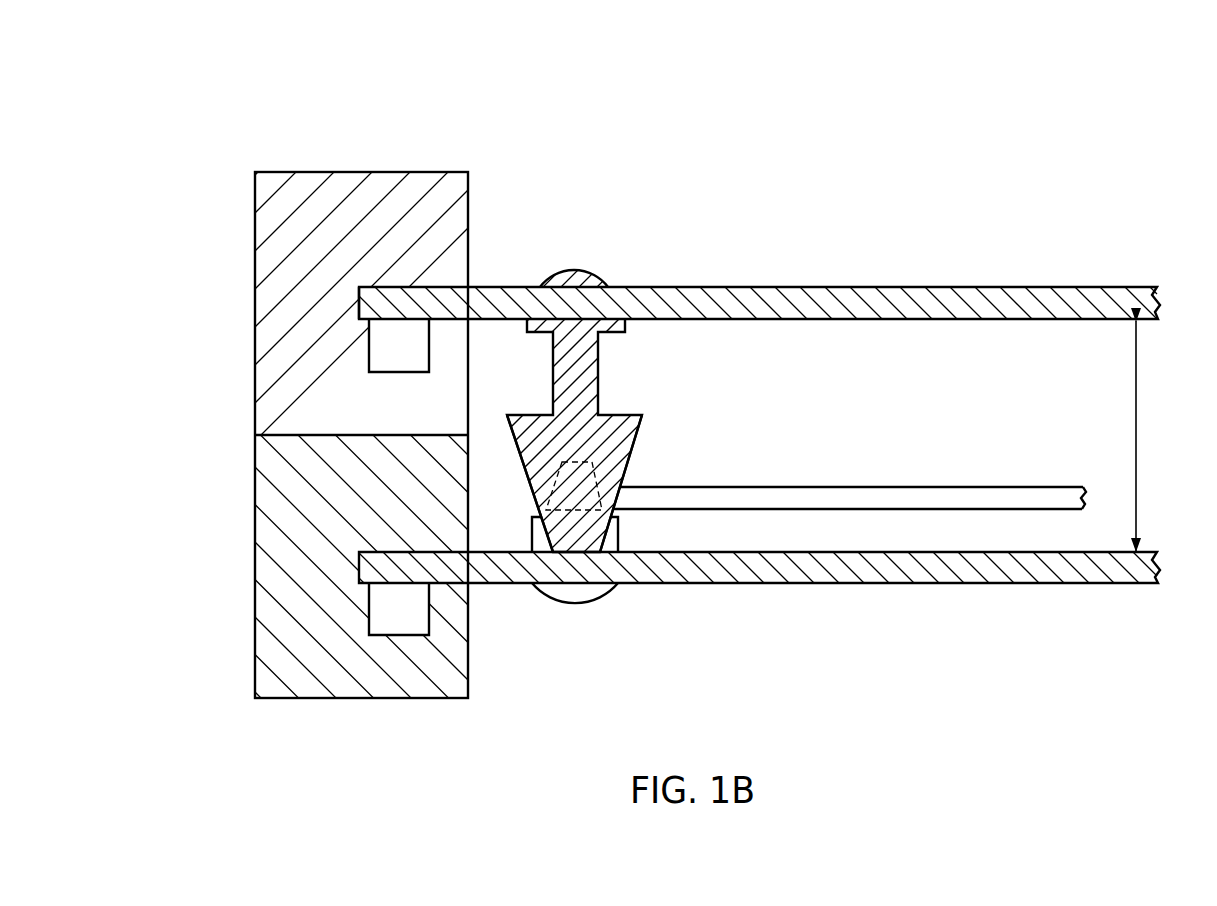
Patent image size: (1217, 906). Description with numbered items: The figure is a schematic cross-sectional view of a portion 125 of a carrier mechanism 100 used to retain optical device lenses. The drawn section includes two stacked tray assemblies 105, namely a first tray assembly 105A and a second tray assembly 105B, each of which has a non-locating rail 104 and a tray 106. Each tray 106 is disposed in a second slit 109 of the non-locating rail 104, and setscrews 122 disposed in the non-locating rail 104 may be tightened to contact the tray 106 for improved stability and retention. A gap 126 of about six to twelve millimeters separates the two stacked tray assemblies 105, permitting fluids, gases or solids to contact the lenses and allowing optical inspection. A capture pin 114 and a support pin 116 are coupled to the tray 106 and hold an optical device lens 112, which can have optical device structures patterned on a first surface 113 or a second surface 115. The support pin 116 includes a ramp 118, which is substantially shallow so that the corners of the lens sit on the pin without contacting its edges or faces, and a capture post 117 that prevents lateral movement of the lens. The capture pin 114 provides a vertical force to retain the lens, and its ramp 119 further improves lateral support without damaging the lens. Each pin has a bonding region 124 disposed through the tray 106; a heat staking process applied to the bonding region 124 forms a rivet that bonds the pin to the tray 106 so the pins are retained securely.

The carrier mechanism 100 is at (266, 64).
The non-locating rail 104 is at (321, 172).
The tray assembly 105 is at (208, 333).
The first tray assembly 105A is at (253, 527).
The second tray assembly 105B is at (253, 262).
The tray 106 is at (850, 287).
The second slit 109 is at (437, 287).
The optical device lens 112 is at (849, 484).
The first surface 113 is at (945, 487).
The capture pin 114 is at (573, 267).
The second surface 115 is at (935, 510).
The support pin 116 is at (583, 607).
The capture post 117 is at (576, 462).
The ramp 118 is at (614, 514).
The ramp 119 is at (628, 462).
The setscrew 122 is at (370, 345).
The bonding region 124 is at (604, 280).
The portion 125 is at (951, 82).
The gap 126 is at (1136, 413).